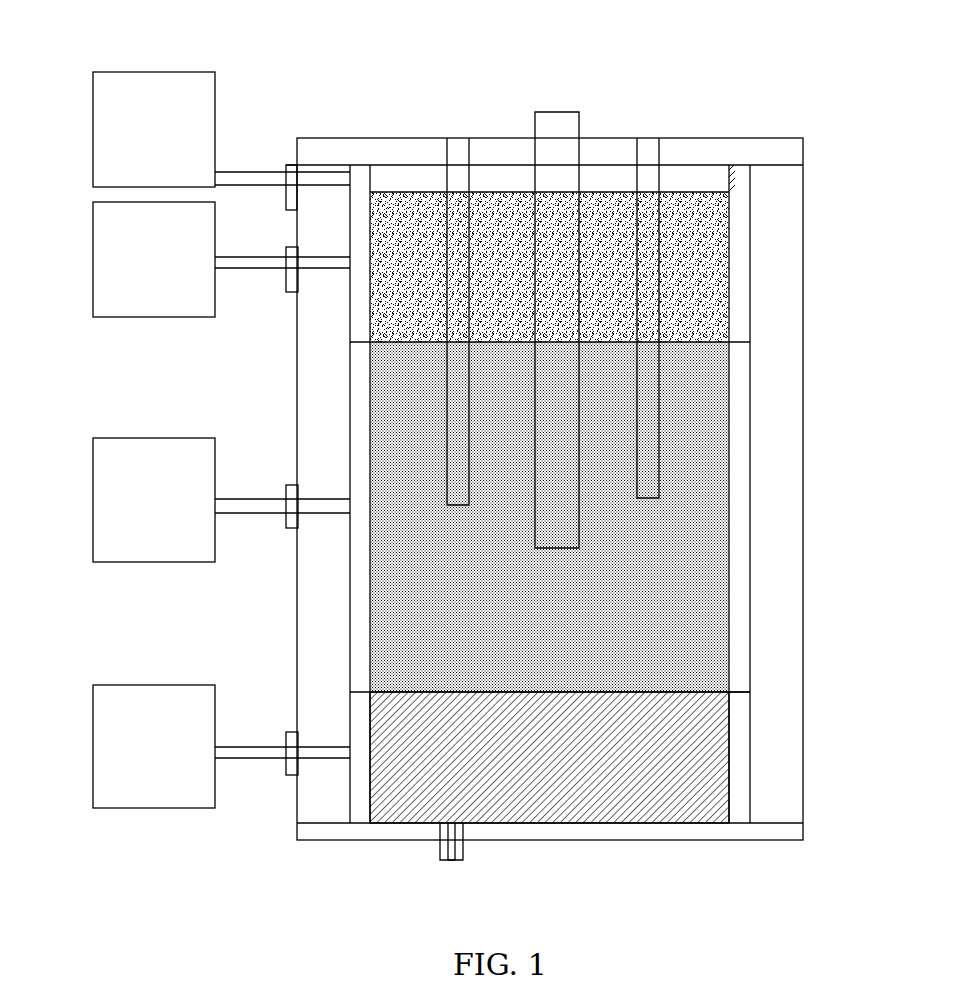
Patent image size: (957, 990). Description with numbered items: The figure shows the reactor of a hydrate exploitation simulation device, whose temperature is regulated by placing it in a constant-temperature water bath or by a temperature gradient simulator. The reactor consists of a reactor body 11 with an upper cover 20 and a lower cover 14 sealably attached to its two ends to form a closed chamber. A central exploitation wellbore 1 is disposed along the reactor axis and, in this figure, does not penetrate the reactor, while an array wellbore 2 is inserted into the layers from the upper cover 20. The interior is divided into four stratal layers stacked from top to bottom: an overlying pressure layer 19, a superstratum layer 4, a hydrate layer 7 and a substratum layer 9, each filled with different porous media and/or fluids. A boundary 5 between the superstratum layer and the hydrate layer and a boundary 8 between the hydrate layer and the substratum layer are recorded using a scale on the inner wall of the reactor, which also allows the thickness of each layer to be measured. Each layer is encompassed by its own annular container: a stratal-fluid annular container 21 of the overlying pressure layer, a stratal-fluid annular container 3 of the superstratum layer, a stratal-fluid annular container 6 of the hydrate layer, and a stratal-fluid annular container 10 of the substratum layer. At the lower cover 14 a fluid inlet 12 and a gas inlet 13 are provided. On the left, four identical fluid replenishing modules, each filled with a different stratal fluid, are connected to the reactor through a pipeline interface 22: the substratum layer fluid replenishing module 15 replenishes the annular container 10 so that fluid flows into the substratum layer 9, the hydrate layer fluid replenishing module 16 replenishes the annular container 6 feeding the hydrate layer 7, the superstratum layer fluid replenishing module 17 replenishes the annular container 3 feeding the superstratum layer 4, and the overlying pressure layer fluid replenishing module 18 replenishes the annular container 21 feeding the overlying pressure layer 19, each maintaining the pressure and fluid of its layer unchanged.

The central exploitation wellbore 1 is at (701, 287).
The array wellbore 2 is at (752, 296).
The stratal-fluid annular container of the superstratum layer 3 is at (577, 494).
The superstratum layer 4 is at (619, 267).
The boundary between the superstratum layer and the hydrate layer 5 is at (609, 323).
The stratal-fluid annular container of the hydrate layer 6 is at (798, 428).
The hydrate layer 7 is at (619, 517).
The boundary between the hydrate layer and the substratum layer 8 is at (609, 673).
The substratum layer 9 is at (619, 756).
The stratal-fluid annular container of the substratum layer 10 is at (804, 757).
The reactor body 11 is at (588, 489).
The fluid inlet 12 is at (510, 857).
The gas inlet 13 is at (513, 877).
The lower cover 14 is at (519, 874).
The substratum layer fluid replenishing module 15 is at (200, 746).
The hydrate layer fluid replenishing module 16 is at (200, 500).
The superstratum layer fluid replenishing module 17 is at (200, 259).
The overlying pressure layer fluid replenishing module 18 is at (200, 129).
The overlying pressure layer 19 is at (483, 99).
The upper cover 20 is at (353, 283).
The stratal-fluid annular container of the overlying pressure layer 21 is at (303, 464).
The pipeline interface 22 is at (267, 175).